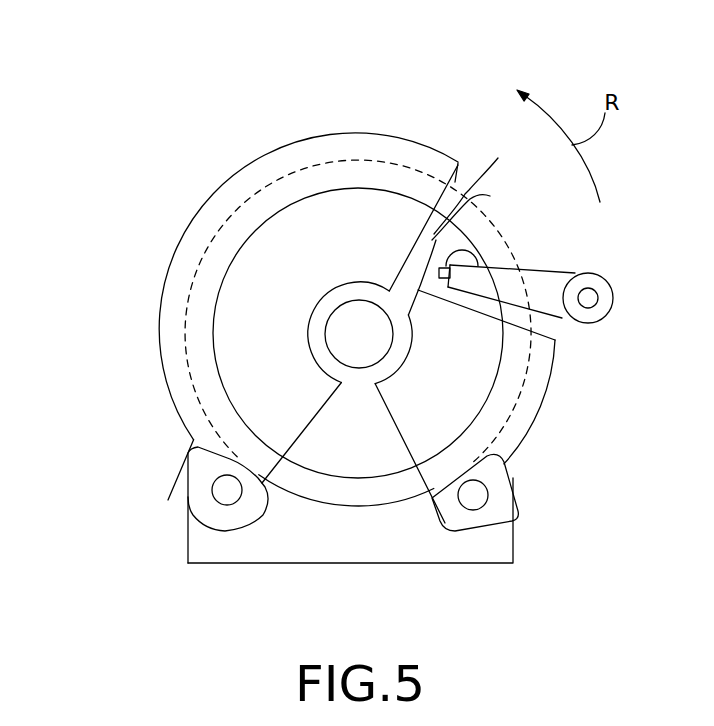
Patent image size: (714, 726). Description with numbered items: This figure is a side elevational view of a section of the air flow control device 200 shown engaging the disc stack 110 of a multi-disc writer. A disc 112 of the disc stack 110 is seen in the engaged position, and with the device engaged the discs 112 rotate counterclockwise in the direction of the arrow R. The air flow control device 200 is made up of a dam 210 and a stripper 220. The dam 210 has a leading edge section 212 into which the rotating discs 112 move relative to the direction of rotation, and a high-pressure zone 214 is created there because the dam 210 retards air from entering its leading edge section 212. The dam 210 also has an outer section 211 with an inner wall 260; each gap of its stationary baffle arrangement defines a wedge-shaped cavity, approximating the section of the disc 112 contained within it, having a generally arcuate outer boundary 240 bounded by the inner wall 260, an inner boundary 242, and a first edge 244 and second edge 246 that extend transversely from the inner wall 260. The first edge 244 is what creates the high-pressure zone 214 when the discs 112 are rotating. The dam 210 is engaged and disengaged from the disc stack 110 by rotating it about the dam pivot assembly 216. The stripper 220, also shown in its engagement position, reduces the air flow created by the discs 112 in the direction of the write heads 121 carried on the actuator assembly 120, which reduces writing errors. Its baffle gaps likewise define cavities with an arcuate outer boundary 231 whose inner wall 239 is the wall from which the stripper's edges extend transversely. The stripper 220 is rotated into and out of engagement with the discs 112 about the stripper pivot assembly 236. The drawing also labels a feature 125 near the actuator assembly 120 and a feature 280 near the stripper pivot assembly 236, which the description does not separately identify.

The air flow control device 200 is at (293, 62).
The outer section 211 is at (158, 212).
The outer boundary 240 is at (236, 210).
The inner wall 260 is at (183, 323).
The outer boundary 231 is at (532, 362).
The disc 112 is at (341, 232).
The disc stack 110 is at (542, 412).
The first edge 244 is at (460, 177).
The leading edge section 212 is at (400, 183).
The high-pressure zone 214 is at (500, 157).
The write heads 121 is at (470, 238).
The actuator assembly 120 is at (542, 292).
The pivot 125 is at (577, 271).
The inner wall 239 is at (527, 382).
The dam 210 is at (177, 497).
The dam pivot assembly 216 is at (240, 548).
The stripper pivot assembly 236 is at (510, 550).
The mounting hole 280 is at (467, 520).
The stripper 220 is at (545, 450).
The second edge 246 is at (287, 437).
The inner boundary 242 is at (323, 371).